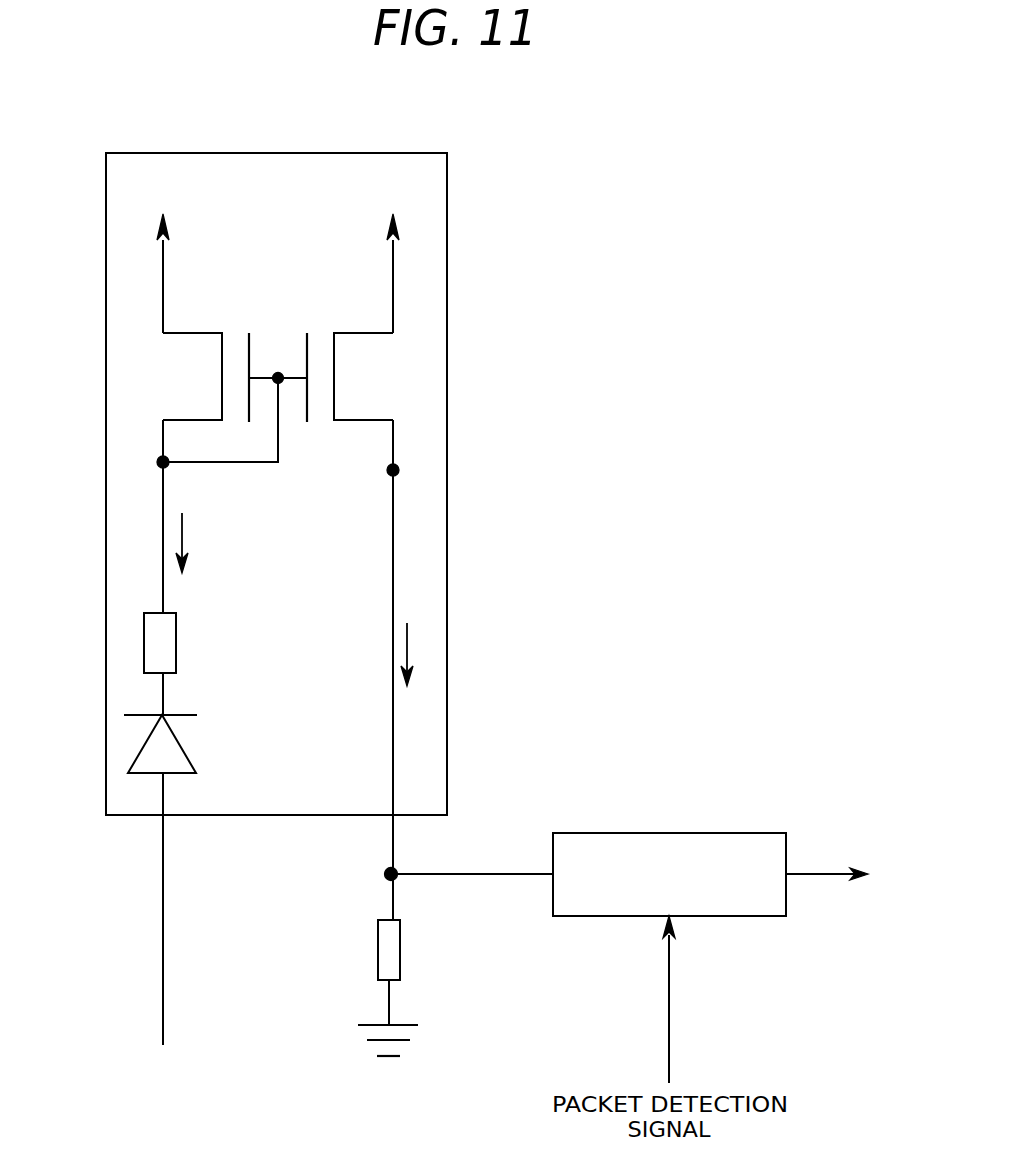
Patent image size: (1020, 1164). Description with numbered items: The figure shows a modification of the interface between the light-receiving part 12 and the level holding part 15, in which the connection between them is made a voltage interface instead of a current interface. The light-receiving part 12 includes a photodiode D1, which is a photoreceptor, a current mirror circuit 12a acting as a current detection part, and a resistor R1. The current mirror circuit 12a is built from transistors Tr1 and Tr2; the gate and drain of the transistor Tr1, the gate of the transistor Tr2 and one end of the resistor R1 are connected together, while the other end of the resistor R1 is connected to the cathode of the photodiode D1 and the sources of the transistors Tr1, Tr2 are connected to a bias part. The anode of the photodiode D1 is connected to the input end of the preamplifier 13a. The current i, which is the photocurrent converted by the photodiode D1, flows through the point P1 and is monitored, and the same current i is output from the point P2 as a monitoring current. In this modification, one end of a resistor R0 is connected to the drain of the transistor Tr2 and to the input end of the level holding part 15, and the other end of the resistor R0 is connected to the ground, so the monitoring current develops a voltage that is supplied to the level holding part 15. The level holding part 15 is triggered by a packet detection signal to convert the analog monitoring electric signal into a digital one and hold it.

The light-receiving part 12 is at (368, 153).
The current mirror circuit 12a is at (279, 340).
The level holding part 15 is at (700, 833).
The preamplifier 13a is at (159, 1079).
The transistor Tr1 is at (190, 377).
The transistor Tr2 is at (366, 377).
The point P1 is at (160, 461).
The point P2 is at (396, 470).
The resistor R1 is at (181, 643).
The photodiode D1 is at (179, 744).
The resistor R0 is at (408, 950).